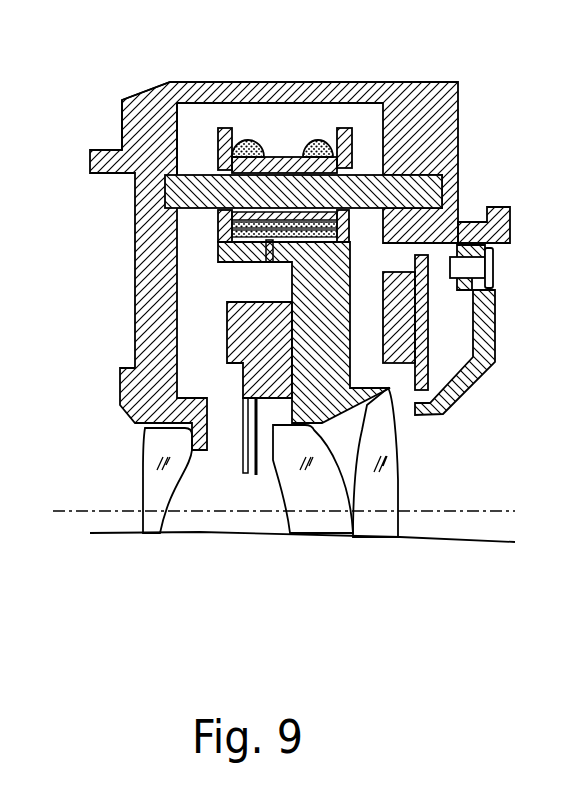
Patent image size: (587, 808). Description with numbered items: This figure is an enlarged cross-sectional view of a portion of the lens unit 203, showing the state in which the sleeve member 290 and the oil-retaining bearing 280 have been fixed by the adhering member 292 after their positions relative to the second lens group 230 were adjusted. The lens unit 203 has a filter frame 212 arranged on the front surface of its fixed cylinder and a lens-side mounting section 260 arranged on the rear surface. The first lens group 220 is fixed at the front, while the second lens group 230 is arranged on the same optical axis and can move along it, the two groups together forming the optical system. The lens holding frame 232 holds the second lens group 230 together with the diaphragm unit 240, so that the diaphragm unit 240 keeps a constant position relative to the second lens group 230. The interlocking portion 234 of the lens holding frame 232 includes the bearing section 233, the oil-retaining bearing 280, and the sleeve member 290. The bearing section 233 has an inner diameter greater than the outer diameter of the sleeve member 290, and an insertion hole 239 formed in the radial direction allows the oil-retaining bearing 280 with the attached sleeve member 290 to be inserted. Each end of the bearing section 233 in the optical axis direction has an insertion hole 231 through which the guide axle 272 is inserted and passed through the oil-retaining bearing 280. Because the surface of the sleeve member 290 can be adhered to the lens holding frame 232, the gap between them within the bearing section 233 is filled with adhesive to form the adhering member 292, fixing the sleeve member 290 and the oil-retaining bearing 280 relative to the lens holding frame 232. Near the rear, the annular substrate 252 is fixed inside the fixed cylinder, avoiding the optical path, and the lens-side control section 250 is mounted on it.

The lens unit 203 is at (73, 70).
The filter frame 212 is at (113, 173).
The guide axle 272 is at (180, 124).
The interlocking portion 234 is at (195, 173).
The lens-side mounting section 260 is at (493, 207).
The oil-retaining bearing 280 is at (285, 153).
The insertion hole 239 is at (333, 123).
The sleeve member 290 is at (272, 150).
The adhering member 292 is at (243, 140).
The lens holding frame 232 is at (388, 393).
The insertion hole 231 is at (267, 262).
The bearing section 233 is at (240, 290).
The diaphragm unit 240 is at (227, 370).
The lens-side control section 250 is at (430, 330).
The annular substrate 252 is at (427, 375).
The first lens group 220 is at (145, 475).
The second lens group 230 is at (398, 480).